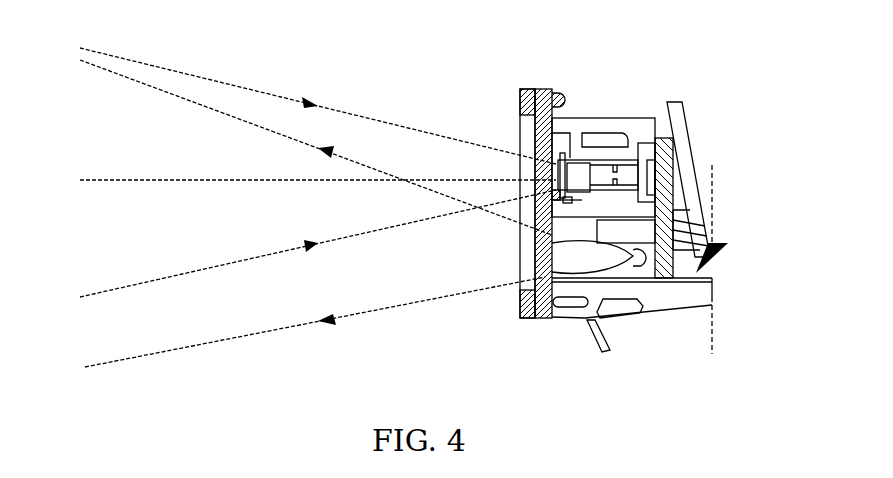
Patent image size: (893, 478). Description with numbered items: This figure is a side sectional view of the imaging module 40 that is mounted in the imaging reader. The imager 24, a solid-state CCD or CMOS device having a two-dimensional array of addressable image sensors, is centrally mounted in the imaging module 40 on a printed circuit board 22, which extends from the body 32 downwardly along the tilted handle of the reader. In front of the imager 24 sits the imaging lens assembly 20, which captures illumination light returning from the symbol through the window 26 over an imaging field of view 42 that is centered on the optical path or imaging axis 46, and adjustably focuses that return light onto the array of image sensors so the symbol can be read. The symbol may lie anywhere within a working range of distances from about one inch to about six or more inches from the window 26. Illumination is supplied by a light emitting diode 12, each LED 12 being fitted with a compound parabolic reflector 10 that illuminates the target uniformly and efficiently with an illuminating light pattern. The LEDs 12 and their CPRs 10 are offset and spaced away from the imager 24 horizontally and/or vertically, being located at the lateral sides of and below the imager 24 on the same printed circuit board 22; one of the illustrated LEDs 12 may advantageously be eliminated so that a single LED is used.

The compound parabolic reflector 10 is at (578, 320).
The light emitting diode 12 is at (637, 250).
The imaging lens assembly 20 is at (615, 160).
The printed circuit board 22 is at (655, 270).
The imager 24 is at (660, 152).
The window 26 is at (540, 96).
The body 32 is at (520, 103).
The imaging module 40 is at (668, 49).
The imaging field of view 42 is at (150, 82).
The imaging axis 46 is at (157, 178).